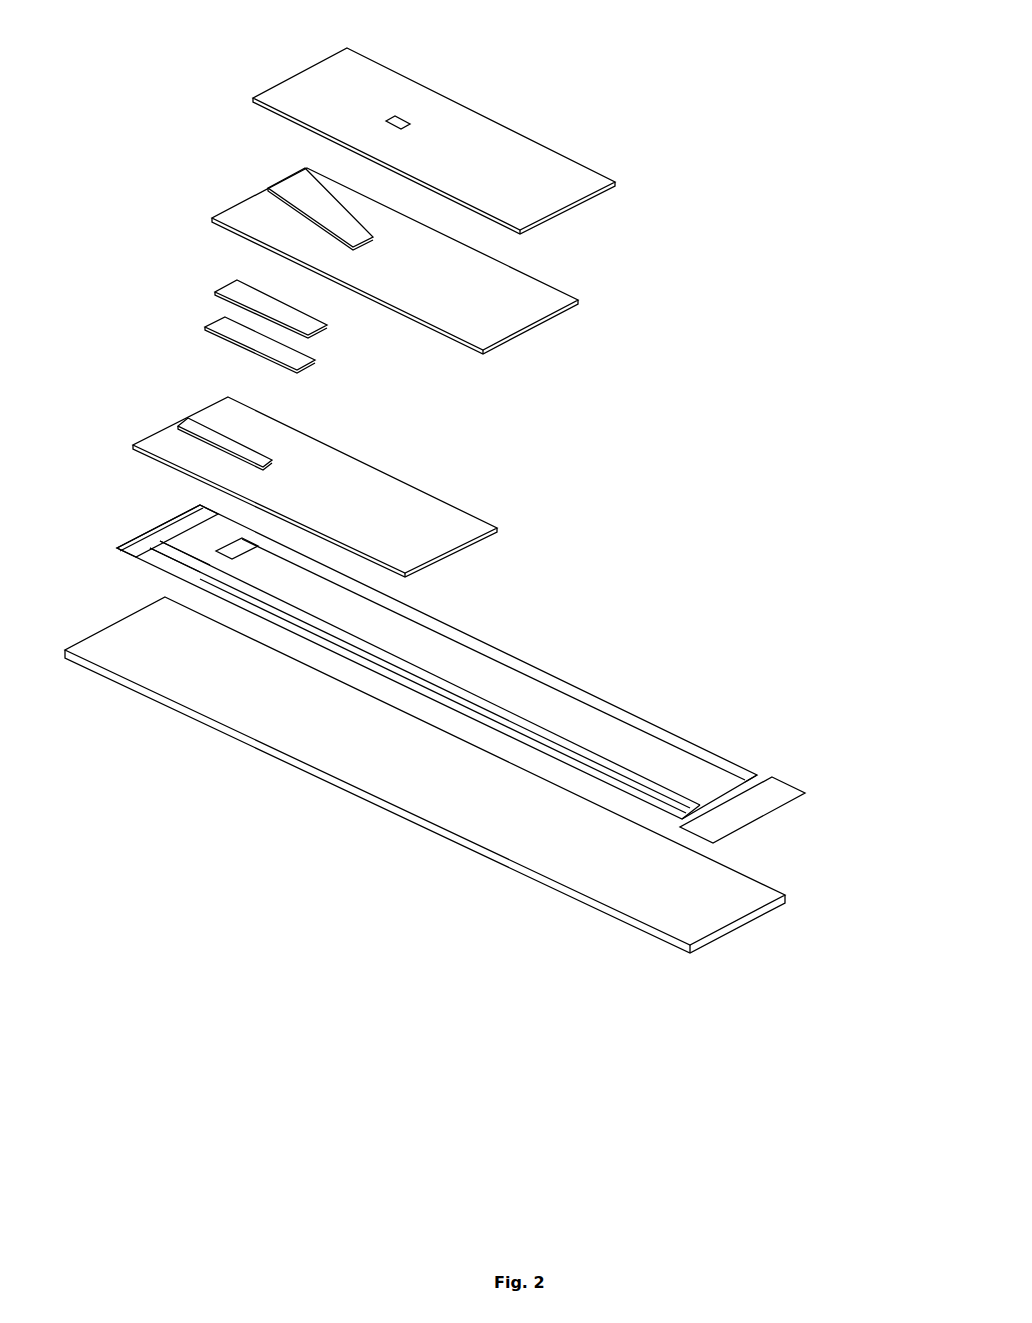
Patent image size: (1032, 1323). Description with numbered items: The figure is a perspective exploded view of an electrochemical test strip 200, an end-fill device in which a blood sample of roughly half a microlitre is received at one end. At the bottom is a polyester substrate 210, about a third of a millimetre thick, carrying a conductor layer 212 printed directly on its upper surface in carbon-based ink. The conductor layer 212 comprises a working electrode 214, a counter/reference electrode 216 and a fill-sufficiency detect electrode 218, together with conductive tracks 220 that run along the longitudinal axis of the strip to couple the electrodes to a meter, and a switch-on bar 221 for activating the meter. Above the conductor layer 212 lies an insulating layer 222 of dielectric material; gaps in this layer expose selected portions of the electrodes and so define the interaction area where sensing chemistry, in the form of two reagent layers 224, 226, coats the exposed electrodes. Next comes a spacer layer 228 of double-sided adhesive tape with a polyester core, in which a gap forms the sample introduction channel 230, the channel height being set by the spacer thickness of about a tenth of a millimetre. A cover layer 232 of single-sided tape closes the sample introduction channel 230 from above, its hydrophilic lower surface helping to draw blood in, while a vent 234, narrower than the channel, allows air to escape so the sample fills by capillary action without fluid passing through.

The electrochemical test strip 200 is at (818, 437).
The substrate 210 is at (448, 808).
The conductor layer 212 is at (207, 582).
The working electrode 214 is at (160, 526).
The counter/reference electrode 216 is at (190, 553).
The fill-sufficiency detect electrode 218 is at (238, 555).
The conductive tracks 220 is at (472, 703).
The switch-on bar 221 is at (773, 792).
The insulating layer 222 is at (355, 470).
The reagent layer 224 is at (235, 330).
The reagent layer 226 is at (242, 295).
The spacer layer 228 is at (395, 287).
The sample introduction channel 230 is at (277, 205).
The cover layer 232 is at (487, 170).
The vent 234 is at (397, 119).